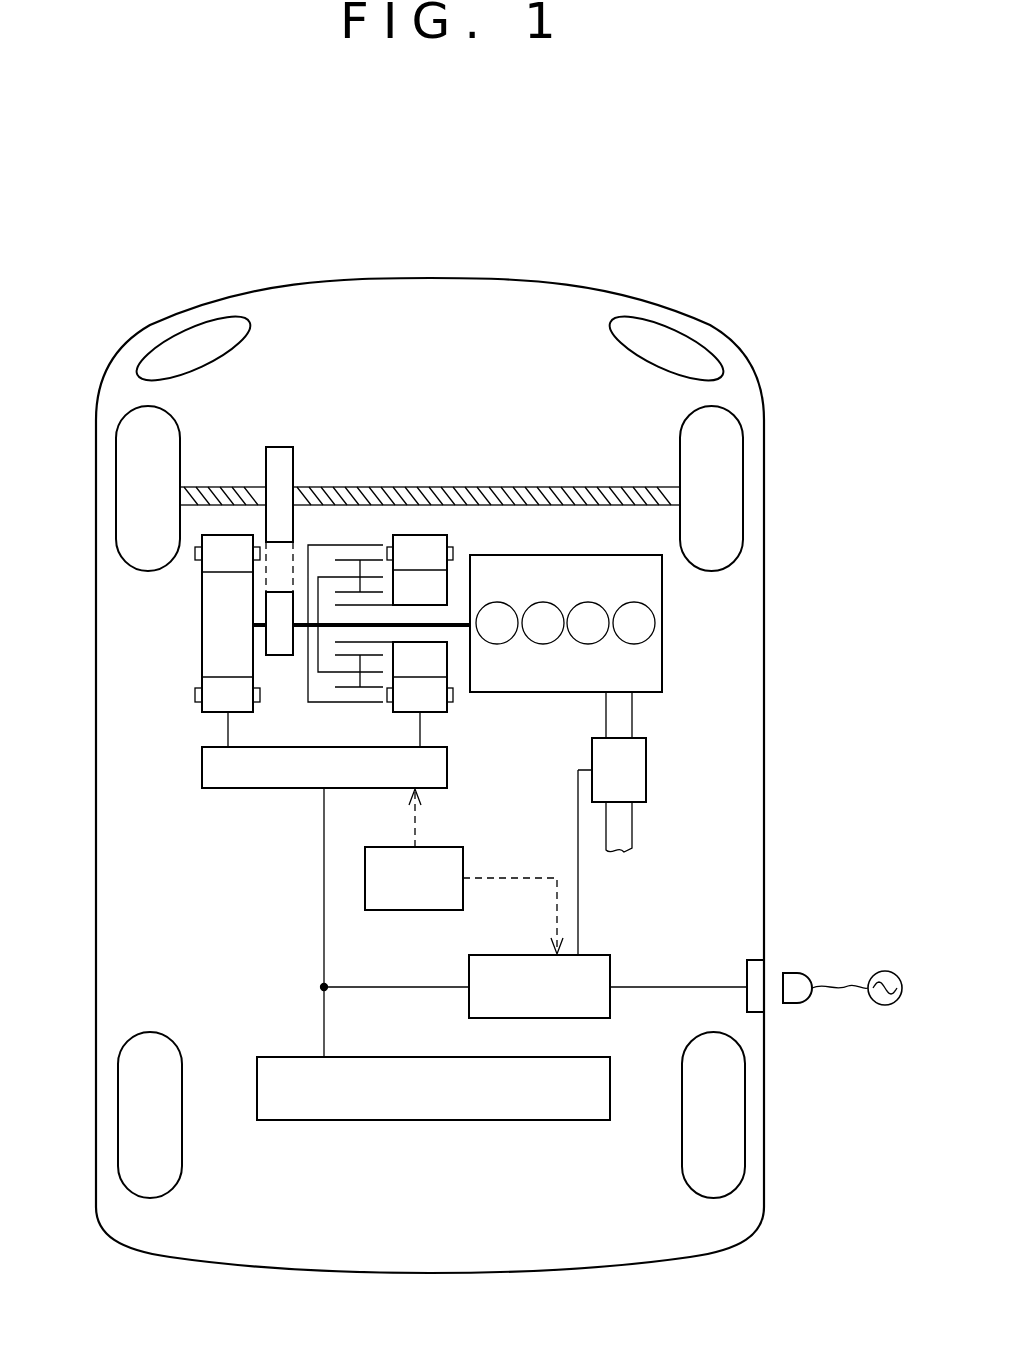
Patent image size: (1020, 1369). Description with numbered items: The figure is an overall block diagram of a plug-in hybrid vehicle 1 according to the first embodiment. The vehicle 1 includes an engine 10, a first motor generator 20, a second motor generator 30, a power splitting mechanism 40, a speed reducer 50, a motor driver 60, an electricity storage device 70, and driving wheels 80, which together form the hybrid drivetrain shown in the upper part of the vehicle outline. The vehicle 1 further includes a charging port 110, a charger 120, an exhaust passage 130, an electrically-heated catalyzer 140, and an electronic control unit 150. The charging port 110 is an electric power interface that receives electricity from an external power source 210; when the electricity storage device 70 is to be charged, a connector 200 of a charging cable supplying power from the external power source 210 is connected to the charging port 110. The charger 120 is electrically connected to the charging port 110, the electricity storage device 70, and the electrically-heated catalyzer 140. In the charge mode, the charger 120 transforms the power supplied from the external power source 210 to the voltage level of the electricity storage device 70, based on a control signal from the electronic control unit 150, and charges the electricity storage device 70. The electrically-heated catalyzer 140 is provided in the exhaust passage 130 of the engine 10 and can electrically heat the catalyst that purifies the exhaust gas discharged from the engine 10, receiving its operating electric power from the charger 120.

The plug-in hybrid vehicle 1 is at (158, 231).
The engine 10 is at (663, 672).
The first motor generator 20 is at (420, 535).
The second motor generator 30 is at (202, 647).
The power splitting mechanism 40 is at (345, 545).
The speed reducer 50 is at (282, 440).
The motor driver 60 is at (202, 770).
The electricity storage device 70 is at (433, 1120).
The driving wheels 80 is at (742, 492).
The charging port 110 is at (760, 960).
The charger 120 is at (588, 955).
The exhaust passage 130 is at (632, 713).
The electrically-heated catalyzer 140 is at (646, 767).
The electronic control unit 150 is at (445, 847).
The connector 200 is at (798, 1003).
The external power source 210 is at (885, 1005).